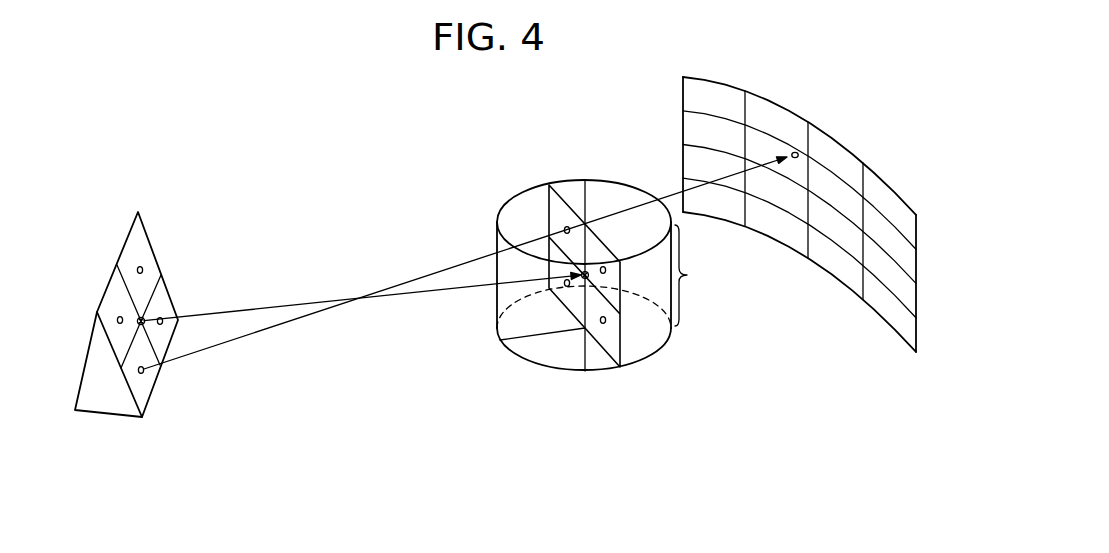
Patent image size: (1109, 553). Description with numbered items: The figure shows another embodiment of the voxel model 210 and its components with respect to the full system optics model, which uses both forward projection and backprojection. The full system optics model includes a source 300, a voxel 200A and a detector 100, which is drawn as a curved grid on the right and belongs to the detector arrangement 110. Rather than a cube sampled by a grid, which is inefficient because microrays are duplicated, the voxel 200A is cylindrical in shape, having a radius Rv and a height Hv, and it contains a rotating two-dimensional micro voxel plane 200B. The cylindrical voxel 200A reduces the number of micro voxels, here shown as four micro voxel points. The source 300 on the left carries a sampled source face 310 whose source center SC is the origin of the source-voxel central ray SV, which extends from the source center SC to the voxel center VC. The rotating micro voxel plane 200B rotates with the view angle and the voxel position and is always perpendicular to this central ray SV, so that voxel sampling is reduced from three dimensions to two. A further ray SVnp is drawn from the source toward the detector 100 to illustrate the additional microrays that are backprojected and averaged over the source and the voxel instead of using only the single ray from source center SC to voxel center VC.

The detector 100 is at (772, 101).
The display device 110 is at (810, 196).
The voxel model 210 is at (575, 284).
The voxel 200A is at (675, 334).
The rotating 2-D micro voxel plane 200B is at (586, 340).
The source 300 is at (95, 415).
The camera sensor plane 310 is at (161, 203).
The source center SC is at (138, 319).
The source-voxel central ray SV is at (276, 277).
The sensor vector through neighboring pixel SVnp is at (409, 240).
The voxel center VC is at (586, 273).
The height Hv is at (697, 275).
The radius Rv is at (540, 336).